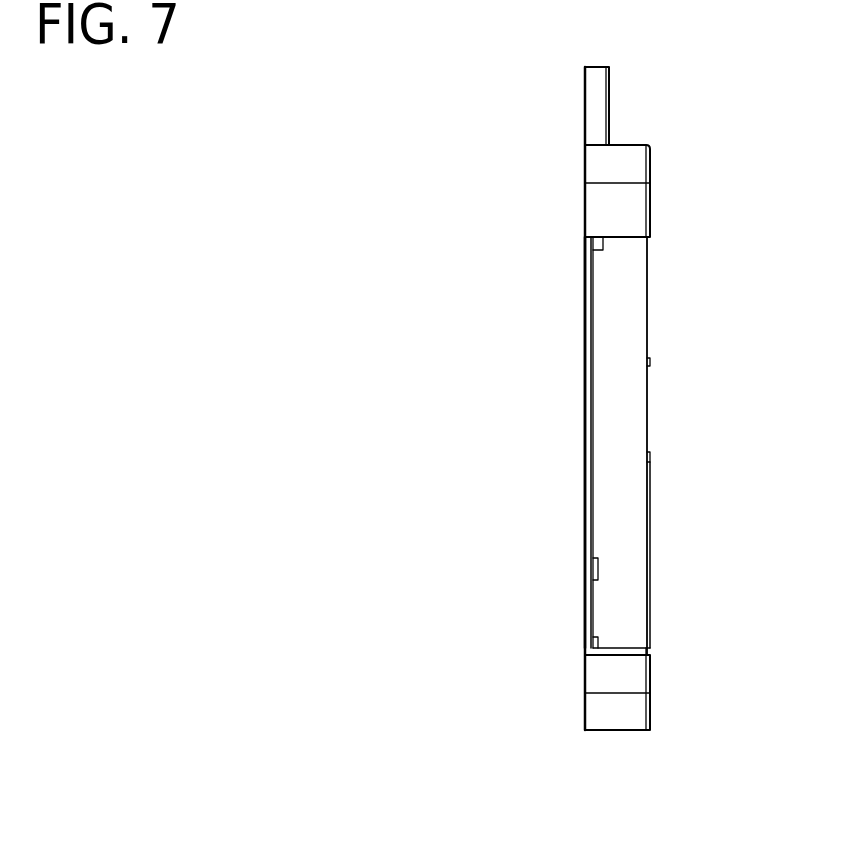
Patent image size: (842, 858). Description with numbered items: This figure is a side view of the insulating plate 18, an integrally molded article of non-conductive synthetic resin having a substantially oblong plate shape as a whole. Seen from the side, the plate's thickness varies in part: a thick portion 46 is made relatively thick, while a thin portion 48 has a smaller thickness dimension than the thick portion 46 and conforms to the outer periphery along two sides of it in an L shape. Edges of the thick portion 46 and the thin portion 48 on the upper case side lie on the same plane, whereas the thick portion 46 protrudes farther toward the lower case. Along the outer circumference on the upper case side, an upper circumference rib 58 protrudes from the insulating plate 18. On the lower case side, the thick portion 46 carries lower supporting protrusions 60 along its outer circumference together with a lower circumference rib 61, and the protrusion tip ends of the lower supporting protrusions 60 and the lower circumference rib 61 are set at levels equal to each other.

The insulating plate 18 is at (630, 365).
The thick portion 46 is at (620, 305).
The thin portion 48 is at (592, 127).
The upper circumference rib 58 is at (585, 385).
The lower supporting protrusions 60 is at (648, 362).
The lower circumference rib 61 is at (648, 552).